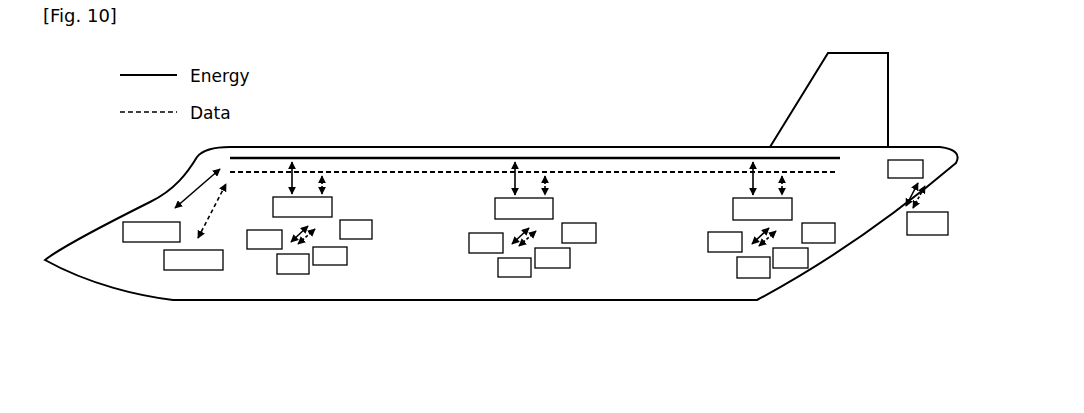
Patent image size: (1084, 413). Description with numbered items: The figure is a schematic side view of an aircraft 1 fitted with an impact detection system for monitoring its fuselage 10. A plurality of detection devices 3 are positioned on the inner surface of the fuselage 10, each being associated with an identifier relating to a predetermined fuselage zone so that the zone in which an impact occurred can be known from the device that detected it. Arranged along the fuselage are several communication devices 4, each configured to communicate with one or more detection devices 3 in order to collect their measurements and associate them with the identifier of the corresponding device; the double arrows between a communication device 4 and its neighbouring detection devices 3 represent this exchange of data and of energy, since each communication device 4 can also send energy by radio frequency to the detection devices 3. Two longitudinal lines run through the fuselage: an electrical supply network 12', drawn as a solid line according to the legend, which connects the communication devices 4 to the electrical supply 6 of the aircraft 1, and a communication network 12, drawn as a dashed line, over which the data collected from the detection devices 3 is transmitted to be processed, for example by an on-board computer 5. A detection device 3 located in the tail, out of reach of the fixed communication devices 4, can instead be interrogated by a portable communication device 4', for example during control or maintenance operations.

The aircraft 1 is at (558, 116).
The detection device 3 is at (586, 219).
The communication device 4 is at (532, 191).
The portable communication device 4' is at (927, 223).
The on-board computer 5 is at (195, 227).
The electrical supply 6 is at (171, 205).
The fuselage 10 is at (620, 300).
The communication network 12 is at (534, 133).
The electrical supply network 12' is at (535, 117).